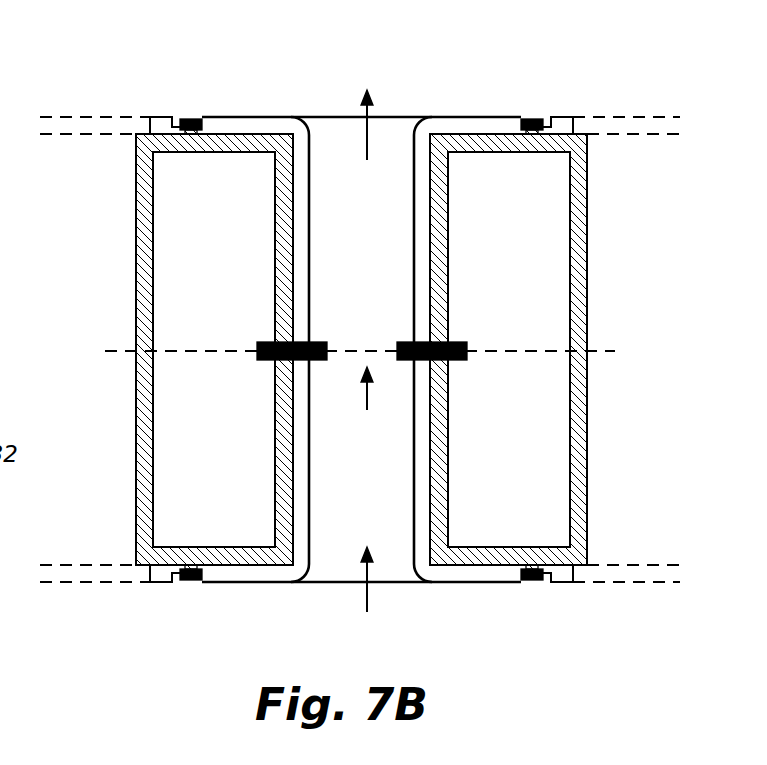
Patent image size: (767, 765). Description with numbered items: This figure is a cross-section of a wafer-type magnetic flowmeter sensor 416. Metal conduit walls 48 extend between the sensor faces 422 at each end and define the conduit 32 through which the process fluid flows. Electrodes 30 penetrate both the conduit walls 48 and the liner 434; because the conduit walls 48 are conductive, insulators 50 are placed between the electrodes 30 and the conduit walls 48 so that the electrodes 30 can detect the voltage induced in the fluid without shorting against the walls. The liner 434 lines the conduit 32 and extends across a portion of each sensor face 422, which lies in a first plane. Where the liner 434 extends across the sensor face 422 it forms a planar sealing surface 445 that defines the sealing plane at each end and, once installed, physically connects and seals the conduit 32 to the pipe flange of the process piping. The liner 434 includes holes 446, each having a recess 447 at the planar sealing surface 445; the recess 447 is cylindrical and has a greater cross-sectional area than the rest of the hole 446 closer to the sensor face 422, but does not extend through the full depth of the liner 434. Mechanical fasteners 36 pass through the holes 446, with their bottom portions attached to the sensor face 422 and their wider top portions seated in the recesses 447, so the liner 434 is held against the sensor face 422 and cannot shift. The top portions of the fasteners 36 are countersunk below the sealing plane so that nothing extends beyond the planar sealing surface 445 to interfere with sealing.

The electrodes 30 is at (257, 346).
The conduit 32 is at (347, 327).
The mechanical fasteners 36 is at (192, 118).
The conduit walls 48 is at (275, 232).
The insulators 50 is at (275, 362).
The magnetic flowmeter sensor 416 is at (600, 278).
The sensor face 422 is at (258, 133).
The liner 434 is at (318, 134).
The planar sealing surface 445 is at (461, 117).
The holes 446 is at (218, 128).
The recess 447 is at (172, 117).